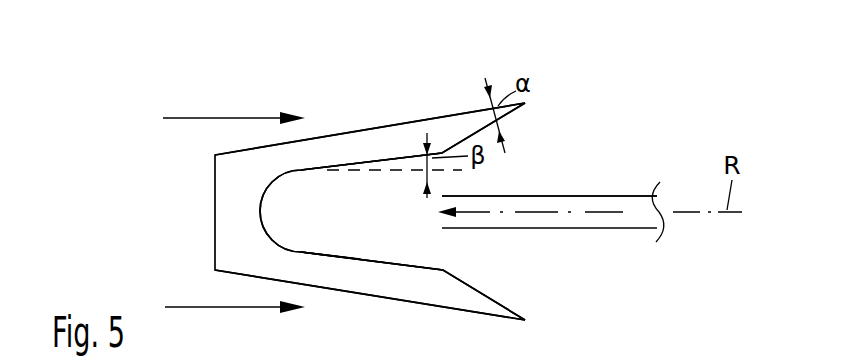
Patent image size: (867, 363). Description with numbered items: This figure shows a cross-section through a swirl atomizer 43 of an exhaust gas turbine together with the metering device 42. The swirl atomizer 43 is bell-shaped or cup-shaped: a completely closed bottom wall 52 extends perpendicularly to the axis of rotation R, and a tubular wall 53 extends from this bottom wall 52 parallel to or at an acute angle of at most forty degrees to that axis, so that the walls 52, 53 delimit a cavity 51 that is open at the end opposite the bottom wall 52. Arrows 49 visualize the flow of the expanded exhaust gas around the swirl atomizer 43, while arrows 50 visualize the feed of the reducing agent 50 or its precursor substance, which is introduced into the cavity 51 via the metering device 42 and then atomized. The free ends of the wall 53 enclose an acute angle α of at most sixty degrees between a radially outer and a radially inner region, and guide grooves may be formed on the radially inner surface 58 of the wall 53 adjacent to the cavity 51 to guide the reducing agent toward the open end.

The metering device 42 is at (600, 183).
The swirl atomizer 43 is at (378, 112).
The arrows 49 is at (183, 118).
The arrows 50 is at (603, 215).
The cavity 51 is at (388, 227).
The bottom wall 52 is at (228, 212).
The tubular wall 53 is at (438, 292).
The radially inner surface 58 is at (327, 242).